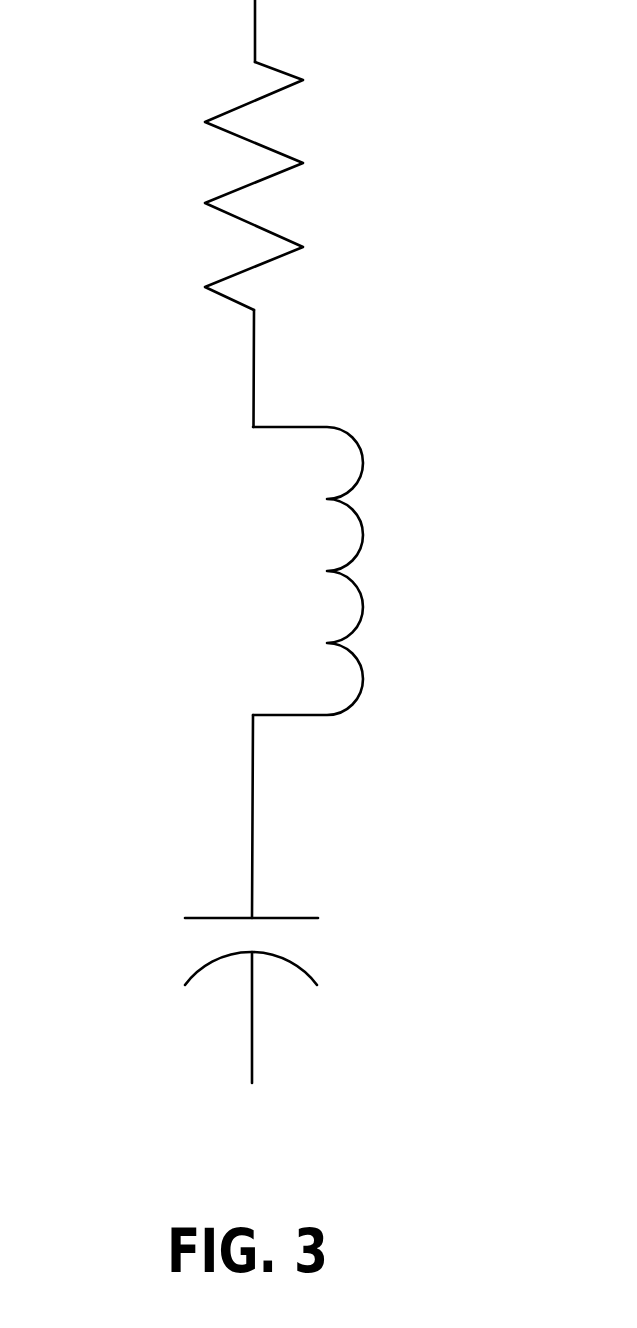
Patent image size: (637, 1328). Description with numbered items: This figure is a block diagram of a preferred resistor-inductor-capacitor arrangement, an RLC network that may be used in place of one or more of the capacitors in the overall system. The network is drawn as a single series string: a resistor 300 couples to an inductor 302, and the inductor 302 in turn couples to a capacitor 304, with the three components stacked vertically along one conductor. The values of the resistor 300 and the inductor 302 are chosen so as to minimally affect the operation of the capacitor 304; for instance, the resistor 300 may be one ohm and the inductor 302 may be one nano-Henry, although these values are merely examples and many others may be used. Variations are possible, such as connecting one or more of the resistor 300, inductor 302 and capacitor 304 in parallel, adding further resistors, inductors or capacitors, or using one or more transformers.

The resistor 300 is at (213, 197).
The inductor 302 is at (363, 537).
The capacitor 304 is at (203, 965).